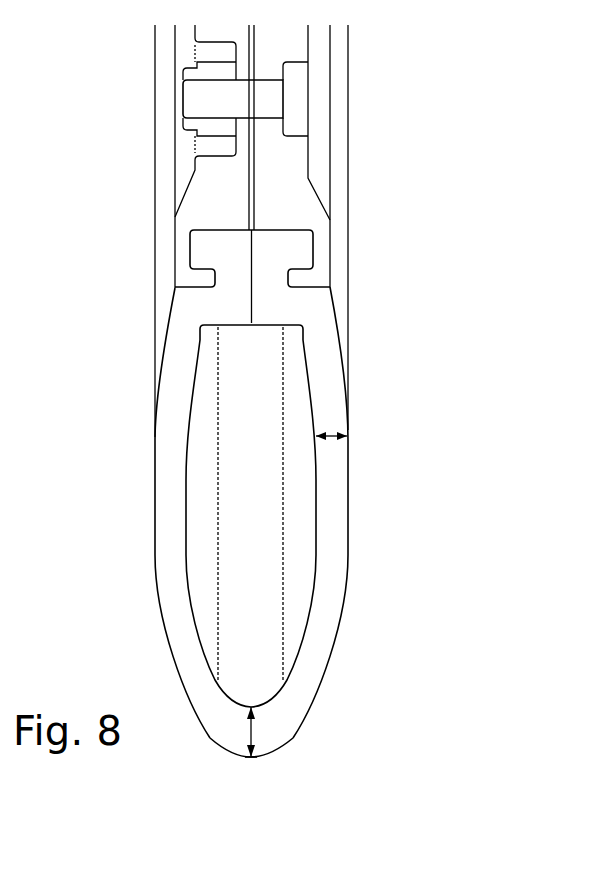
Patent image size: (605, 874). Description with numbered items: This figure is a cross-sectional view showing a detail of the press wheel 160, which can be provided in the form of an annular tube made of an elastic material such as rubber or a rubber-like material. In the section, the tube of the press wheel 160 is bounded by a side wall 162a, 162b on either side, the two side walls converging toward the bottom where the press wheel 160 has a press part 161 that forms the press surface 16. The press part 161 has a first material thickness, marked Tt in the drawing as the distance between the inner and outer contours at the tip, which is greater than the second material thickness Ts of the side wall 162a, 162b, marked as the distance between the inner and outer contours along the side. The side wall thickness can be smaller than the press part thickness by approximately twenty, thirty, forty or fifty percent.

The press wheel 160 is at (90, 487).
The side wall 162a is at (177, 408).
The side wall 162b is at (338, 528).
The press part 161 is at (230, 732).
The press surface 16 is at (255, 766).